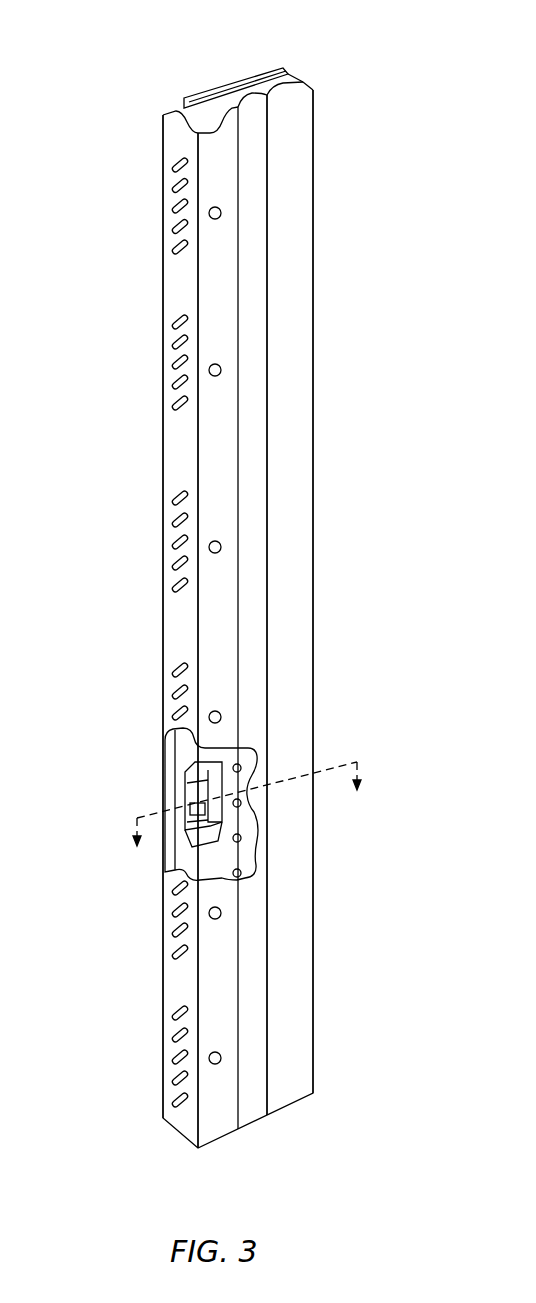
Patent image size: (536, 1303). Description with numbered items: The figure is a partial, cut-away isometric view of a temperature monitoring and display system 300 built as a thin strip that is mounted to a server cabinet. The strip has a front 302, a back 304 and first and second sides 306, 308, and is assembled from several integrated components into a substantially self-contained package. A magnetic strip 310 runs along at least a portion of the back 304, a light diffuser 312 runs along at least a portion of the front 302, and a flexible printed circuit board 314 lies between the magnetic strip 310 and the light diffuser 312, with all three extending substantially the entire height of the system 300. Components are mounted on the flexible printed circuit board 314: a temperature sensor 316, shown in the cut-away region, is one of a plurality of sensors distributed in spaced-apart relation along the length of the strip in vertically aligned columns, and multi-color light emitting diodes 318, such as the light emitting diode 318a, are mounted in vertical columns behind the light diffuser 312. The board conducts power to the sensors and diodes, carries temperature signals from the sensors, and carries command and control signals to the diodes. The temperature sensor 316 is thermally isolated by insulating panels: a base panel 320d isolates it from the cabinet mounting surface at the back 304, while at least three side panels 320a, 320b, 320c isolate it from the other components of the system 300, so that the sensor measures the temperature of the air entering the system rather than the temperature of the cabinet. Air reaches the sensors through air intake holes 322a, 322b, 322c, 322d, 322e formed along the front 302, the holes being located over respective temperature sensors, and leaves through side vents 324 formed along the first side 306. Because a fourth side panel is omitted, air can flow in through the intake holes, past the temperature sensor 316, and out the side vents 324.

The temperature monitoring and display system 300 is at (308, 74).
The front 302 is at (302, 200).
The back 304 is at (175, 108).
The first side 306 is at (170, 147).
The second side 308 is at (317, 162).
The magnetic strip 310 is at (230, 82).
The light diffuser 312 is at (253, 125).
The flexible printed circuit board 314 is at (300, 78).
The temperature sensor 316 is at (185, 812).
The light emitting diodes 318 is at (242, 765).
The light emitting diode 318a is at (242, 803).
The side panel 320a is at (185, 846).
The side panel 320b is at (216, 783).
The side panel 320c is at (185, 778).
The base panel 320d is at (187, 820).
The air intake hole 322a is at (221, 213).
The air intake hole 322b is at (221, 371).
The air intake hole 322c is at (221, 548).
The air intake hole 322d is at (222, 714).
The air intake hole 322e is at (221, 1059).
The side vents 324 is at (175, 325).